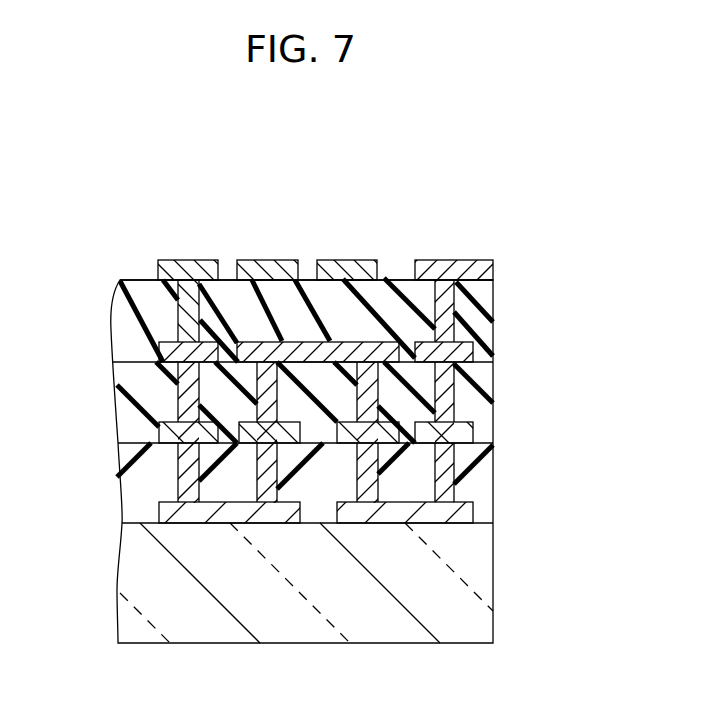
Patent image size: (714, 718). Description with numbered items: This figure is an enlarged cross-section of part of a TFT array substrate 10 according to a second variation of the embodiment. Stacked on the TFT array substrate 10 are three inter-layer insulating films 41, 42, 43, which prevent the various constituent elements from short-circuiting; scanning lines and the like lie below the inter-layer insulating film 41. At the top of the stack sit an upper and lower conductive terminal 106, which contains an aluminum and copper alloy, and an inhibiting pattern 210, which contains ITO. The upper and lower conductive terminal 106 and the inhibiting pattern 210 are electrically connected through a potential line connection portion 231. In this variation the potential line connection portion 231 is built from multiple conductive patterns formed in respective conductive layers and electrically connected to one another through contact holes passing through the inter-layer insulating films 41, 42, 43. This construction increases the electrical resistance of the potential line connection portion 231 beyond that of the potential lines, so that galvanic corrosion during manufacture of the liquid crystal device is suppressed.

The TFT array substrate 10 is at (137, 579).
The inter-layer insulating film 41 is at (137, 491).
The inter-layer insulating film 42 is at (137, 413).
The inter-layer insulating film 43 is at (137, 323).
The upper and lower conductive terminal 106 is at (462, 273).
The inhibiting pattern 210 is at (185, 277).
The potential line connection portion 231 is at (557, 385).